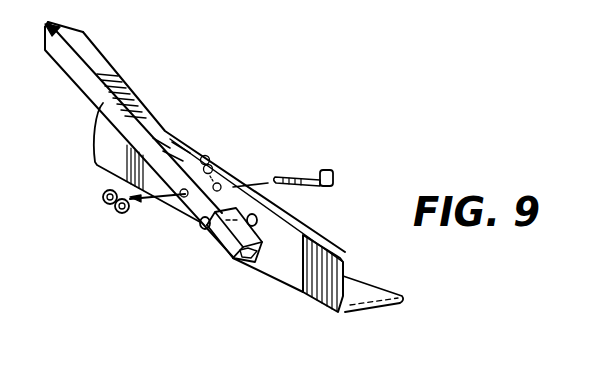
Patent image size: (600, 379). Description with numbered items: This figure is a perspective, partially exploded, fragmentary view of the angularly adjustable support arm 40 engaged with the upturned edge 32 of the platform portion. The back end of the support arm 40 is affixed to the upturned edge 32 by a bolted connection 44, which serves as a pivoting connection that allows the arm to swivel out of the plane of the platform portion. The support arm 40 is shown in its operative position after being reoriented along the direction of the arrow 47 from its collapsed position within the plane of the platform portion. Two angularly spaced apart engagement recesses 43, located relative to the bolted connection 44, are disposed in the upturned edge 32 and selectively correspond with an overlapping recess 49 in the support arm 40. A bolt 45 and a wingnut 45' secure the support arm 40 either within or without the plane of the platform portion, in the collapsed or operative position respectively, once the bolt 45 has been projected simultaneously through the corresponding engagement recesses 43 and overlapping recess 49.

The support arm 40 is at (114, 73).
The upturned edge 32 is at (318, 264).
The arrow 47 is at (69, 170).
The engagement recesses 43 is at (222, 178).
The bolt 45 is at (309, 157).
The wingnut 45' is at (97, 217).
The overlapping recess 49 is at (180, 200).
The bolted connection 44 is at (205, 230).